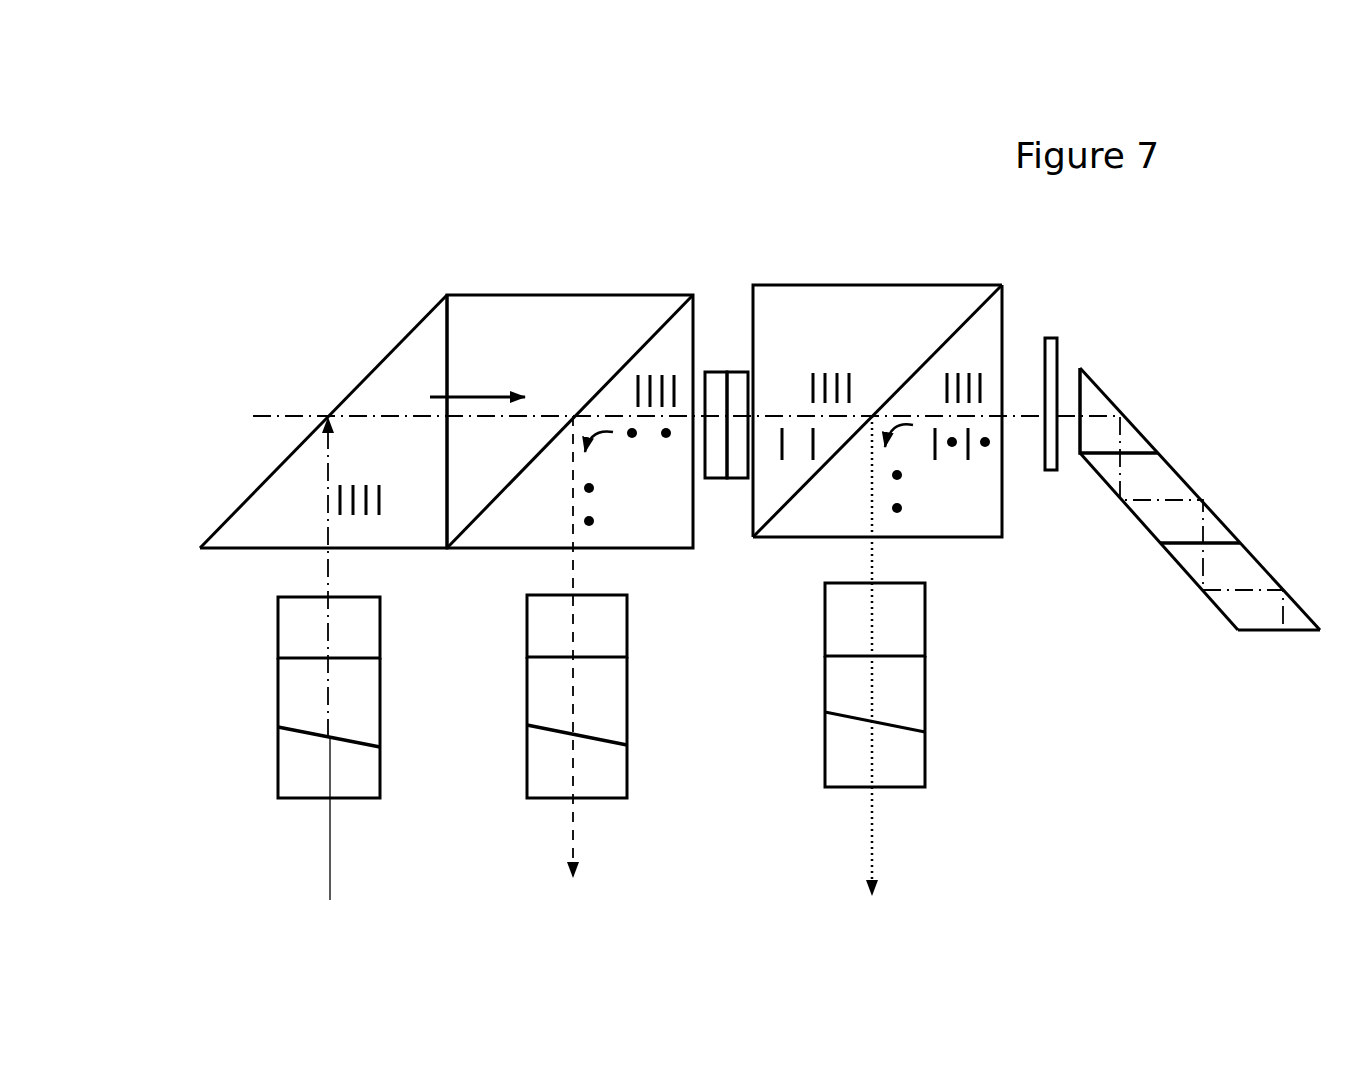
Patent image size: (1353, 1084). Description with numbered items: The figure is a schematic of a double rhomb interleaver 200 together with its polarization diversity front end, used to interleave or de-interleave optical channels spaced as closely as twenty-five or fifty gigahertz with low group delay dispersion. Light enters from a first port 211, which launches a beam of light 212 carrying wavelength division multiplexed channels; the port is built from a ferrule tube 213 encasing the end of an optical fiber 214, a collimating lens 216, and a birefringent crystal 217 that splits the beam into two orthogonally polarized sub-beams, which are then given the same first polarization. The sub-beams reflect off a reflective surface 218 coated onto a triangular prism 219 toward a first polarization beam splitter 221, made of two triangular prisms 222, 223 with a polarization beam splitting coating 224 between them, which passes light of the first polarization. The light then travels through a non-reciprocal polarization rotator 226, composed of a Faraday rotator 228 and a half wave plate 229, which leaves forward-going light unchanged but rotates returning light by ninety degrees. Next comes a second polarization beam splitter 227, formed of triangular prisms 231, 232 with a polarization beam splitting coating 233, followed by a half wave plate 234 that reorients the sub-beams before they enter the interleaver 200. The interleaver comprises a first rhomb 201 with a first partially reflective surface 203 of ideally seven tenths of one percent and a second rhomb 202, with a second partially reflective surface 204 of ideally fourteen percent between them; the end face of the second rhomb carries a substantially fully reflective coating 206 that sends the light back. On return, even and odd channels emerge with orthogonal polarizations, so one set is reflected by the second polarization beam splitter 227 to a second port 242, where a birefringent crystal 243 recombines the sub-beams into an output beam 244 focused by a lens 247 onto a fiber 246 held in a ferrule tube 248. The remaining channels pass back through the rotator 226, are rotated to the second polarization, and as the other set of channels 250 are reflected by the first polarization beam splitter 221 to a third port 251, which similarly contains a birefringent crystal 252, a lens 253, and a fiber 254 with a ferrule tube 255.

The double rhomb interleaver 200 is at (1188, 501).
The first rhomb 201 is at (1187, 480).
The second rhomb 202 is at (1233, 608).
The first partially reflective surface 203 is at (1143, 447).
The second partially reflective surface 204 is at (1213, 538).
The substantially fully reflective coating 206 is at (1300, 630).
The first port 211 is at (312, 659).
The beam of light 212 is at (327, 560).
The ferrule tube 213 is at (290, 792).
The optical fiber 214 is at (332, 780).
The collimating lens 216 is at (277, 693).
The birefringent crystal 217 is at (378, 605).
The reflective surface 218 is at (365, 373).
The triangular prism 219 is at (267, 518).
The first polarization beam splitter 221 is at (436, 346).
The triangular prism 222 is at (483, 307).
The triangular prism 223 is at (608, 482).
The polarization beam splitting coating 224 is at (627, 362).
The non-reciprocal polarization rotator 226 is at (721, 382).
The second polarization beam splitter 227 is at (906, 365).
The Faraday rotator 228 is at (715, 372).
The half wave plate 229 is at (748, 480).
The triangular prism 231 is at (870, 295).
The triangular prism 232 is at (980, 513).
The polarization beam splitting coating 233 is at (970, 315).
The half wave plate 234 is at (1047, 338).
The second port 242 is at (873, 655).
The birefringent crystal 243 is at (925, 612).
The output beam 244 is at (868, 548).
The fiber 246 is at (868, 810).
The lens 247 is at (825, 700).
The ferrule tube 248 is at (925, 767).
The other set of channels 250 is at (572, 560).
The third port 251 is at (581, 657).
The birefringent crystal 252 is at (627, 612).
The lens 253 is at (528, 692).
The fiber 254 is at (573, 768).
The ferrule tube 255 is at (628, 767).